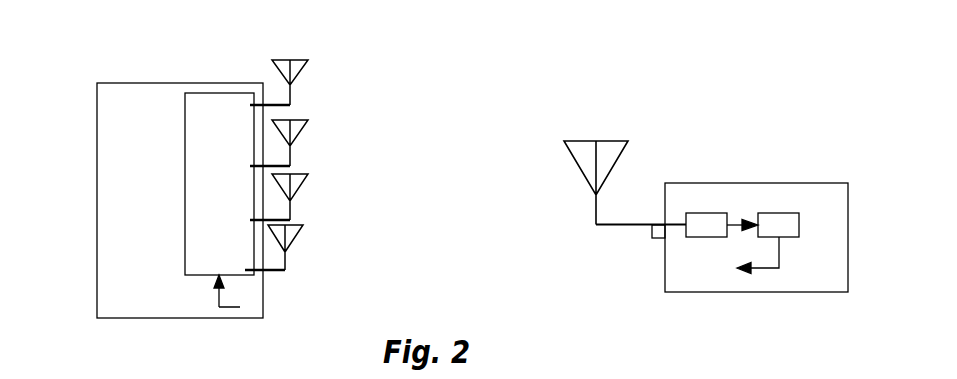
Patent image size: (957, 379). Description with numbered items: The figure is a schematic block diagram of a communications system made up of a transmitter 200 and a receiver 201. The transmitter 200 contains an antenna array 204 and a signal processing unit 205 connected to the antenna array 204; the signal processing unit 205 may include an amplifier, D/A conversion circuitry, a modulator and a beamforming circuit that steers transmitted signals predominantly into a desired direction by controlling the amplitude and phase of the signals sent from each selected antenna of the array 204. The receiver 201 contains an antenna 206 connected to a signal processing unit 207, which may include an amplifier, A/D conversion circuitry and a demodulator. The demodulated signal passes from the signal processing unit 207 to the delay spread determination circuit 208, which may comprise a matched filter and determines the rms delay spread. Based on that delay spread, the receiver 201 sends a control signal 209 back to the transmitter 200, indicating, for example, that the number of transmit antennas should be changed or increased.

The transmitter 200 is at (178, 83).
The receiver 201 is at (755, 183).
The antenna array 204 is at (333, 136).
The signal processing unit 205 is at (184, 184).
The antenna 206 is at (596, 141).
The signal processing unit 207 is at (703, 237).
The delay spread determination circuit 208 is at (779, 212).
The control signal 209 is at (230, 307).